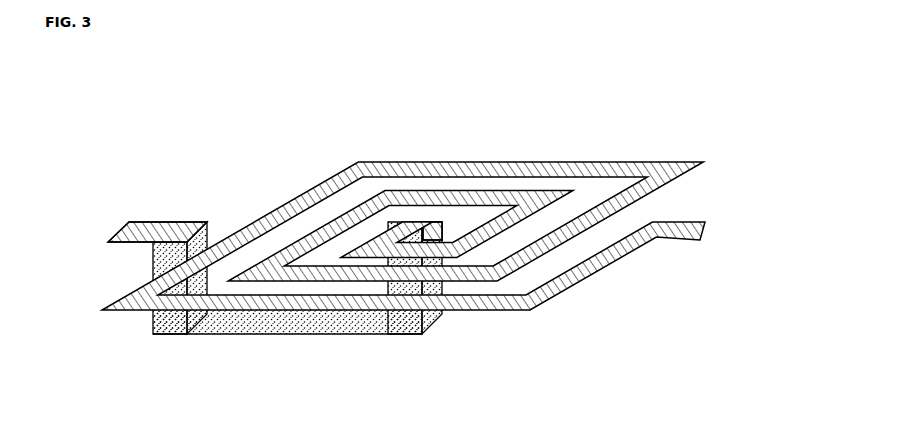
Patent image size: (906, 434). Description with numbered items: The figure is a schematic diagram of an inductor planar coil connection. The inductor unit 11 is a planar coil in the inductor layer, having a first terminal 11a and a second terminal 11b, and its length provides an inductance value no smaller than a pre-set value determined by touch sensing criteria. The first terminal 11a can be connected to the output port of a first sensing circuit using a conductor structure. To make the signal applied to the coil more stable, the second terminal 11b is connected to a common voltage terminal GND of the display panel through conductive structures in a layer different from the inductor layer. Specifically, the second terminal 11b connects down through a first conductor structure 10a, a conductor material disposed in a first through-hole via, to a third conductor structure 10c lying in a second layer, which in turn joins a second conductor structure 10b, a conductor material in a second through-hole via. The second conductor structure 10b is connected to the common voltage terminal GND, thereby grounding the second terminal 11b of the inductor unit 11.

The inductor unit 11 is at (450, 201).
The first terminal 11a is at (678, 232).
The second terminal 11b is at (414, 236).
The first conductor structure 10a is at (405, 327).
The second conductor structure 10b is at (172, 322).
The third conductor structure 10c is at (292, 326).
The common voltage terminal GND is at (160, 232).